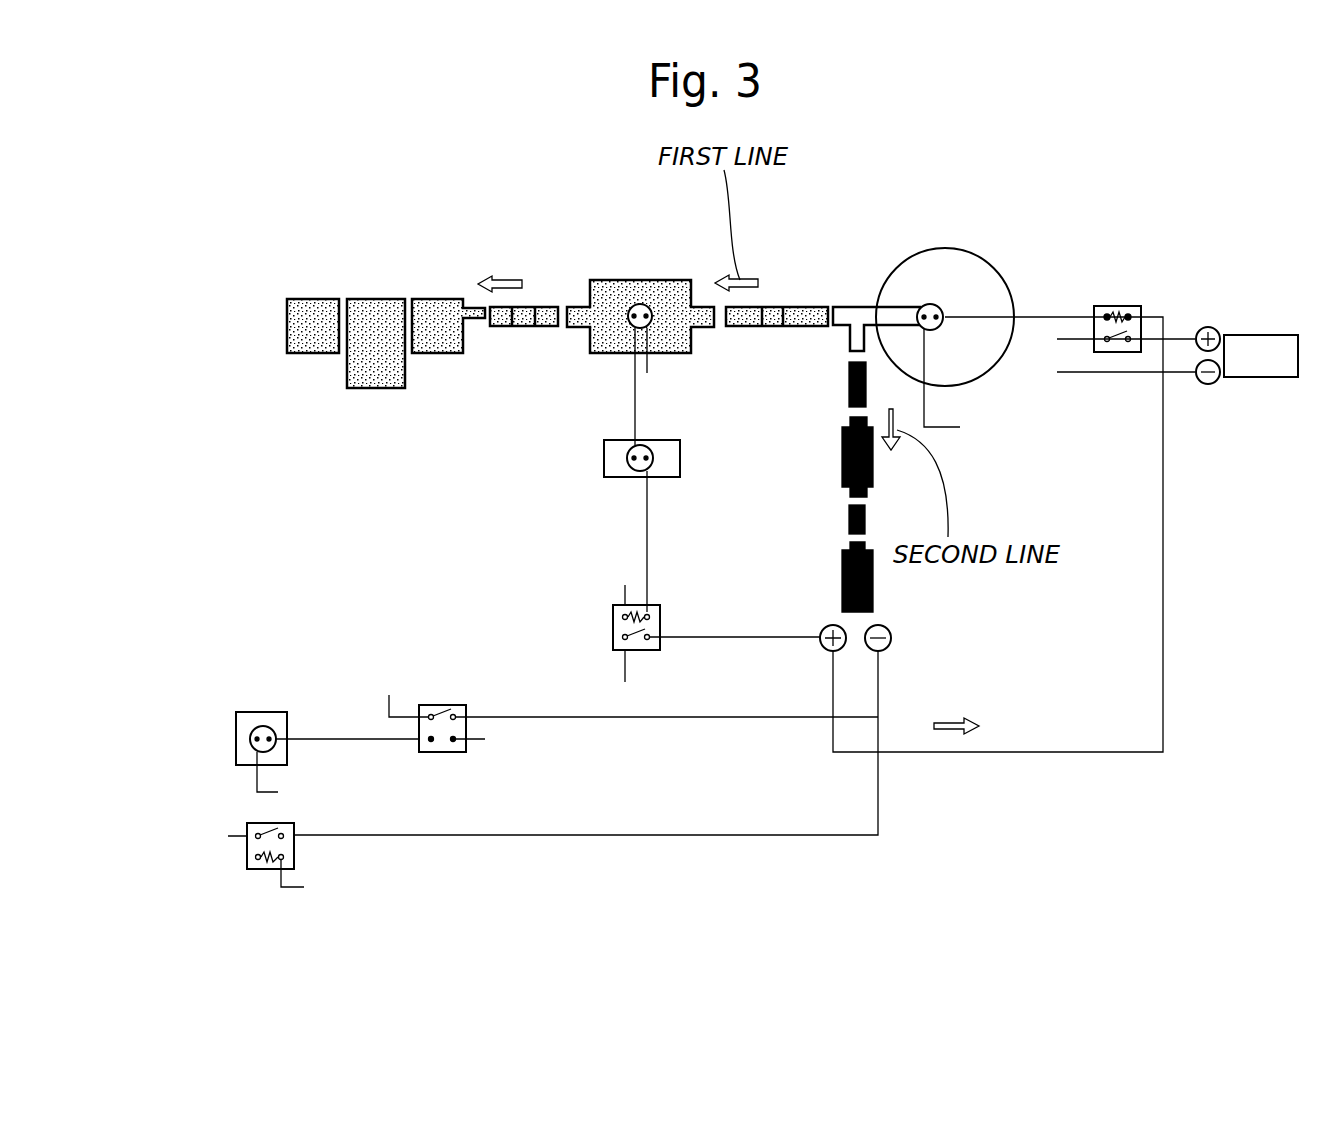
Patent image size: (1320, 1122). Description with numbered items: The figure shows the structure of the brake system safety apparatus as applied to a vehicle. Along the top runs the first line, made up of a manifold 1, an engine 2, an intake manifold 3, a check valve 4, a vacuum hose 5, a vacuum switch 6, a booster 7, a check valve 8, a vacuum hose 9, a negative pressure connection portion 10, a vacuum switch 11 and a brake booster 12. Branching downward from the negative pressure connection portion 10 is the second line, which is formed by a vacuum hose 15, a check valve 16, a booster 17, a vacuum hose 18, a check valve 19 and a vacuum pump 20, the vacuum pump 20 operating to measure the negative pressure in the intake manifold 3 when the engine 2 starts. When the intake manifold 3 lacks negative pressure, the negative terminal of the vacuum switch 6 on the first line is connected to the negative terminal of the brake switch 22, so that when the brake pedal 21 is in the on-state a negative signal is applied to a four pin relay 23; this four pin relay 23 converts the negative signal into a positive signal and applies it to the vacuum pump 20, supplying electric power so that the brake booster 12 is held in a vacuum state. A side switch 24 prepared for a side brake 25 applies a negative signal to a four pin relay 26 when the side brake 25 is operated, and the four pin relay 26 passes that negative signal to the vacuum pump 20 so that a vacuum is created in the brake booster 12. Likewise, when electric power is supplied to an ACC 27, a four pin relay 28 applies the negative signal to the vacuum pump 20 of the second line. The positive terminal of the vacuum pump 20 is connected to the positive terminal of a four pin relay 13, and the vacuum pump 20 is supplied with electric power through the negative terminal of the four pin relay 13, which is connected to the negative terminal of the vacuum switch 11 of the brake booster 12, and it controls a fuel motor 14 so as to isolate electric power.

The manifold 1 is at (312, 298).
The engine 2 is at (370, 298).
The intake manifold 3 is at (434, 298).
The check valve 4 is at (527, 306).
The vacuum hose 5 is at (546, 306).
The vacuum switch 6 is at (640, 304).
The booster 7 is at (668, 298).
The check valve 8 is at (773, 306).
The vacuum hose 9 is at (810, 306).
The negative pressure connection portion 10 is at (854, 306).
The vacuum switch 11 is at (931, 305).
The brake booster 12 is at (968, 270).
The four pin relay 13 is at (1118, 308).
The fuel motor 14 is at (1262, 352).
The vacuum hose 15 is at (848, 362).
The check valve 16 is at (848, 385).
The booster 17 is at (842, 457).
The vacuum hose 18 is at (849, 510).
The check valve 19 is at (849, 522).
The vacuum pump 20 is at (842, 585).
The brake pedal 21 is at (613, 458).
The brake switch 22 is at (643, 445).
The four pin relay 23 is at (613, 637).
The side switch 24 is at (260, 722).
The side brake 25 is at (272, 720).
The four pin relay 26 is at (437, 710).
The ACC 27 is at (258, 868).
The four pin relay 28 is at (250, 822).